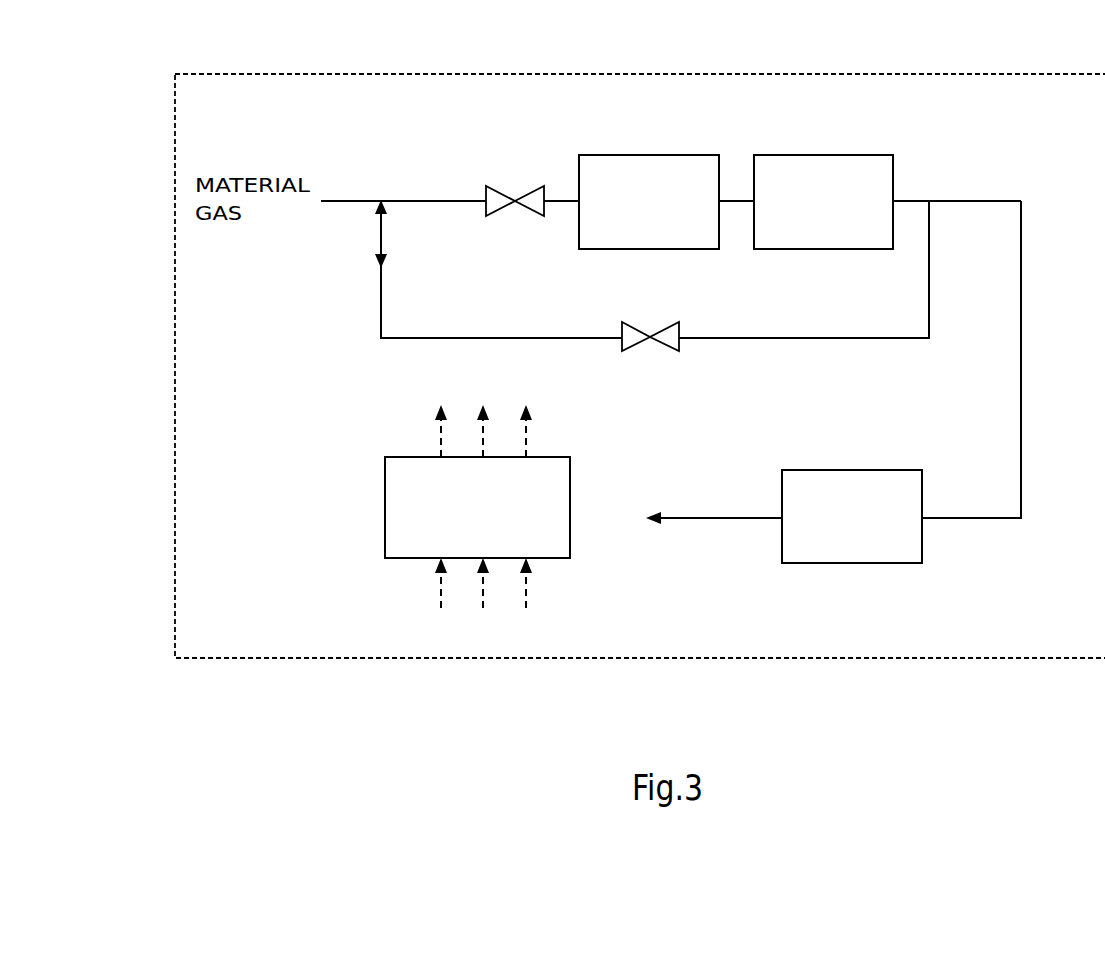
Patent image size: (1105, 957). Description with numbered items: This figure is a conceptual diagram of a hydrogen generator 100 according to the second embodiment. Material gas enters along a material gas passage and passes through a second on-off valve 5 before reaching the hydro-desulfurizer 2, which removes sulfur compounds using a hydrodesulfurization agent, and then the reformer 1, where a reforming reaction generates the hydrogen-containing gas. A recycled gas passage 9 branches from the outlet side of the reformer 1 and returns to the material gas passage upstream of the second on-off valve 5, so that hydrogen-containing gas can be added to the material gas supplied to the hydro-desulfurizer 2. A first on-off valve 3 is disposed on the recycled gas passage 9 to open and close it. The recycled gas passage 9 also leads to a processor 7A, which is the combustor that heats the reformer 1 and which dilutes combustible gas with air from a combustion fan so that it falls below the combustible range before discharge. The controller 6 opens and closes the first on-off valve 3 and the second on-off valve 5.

The hydrogen generator 100 is at (627, 48).
The second on-off valve 5 is at (531, 193).
The hydro-desulfurizer 2 is at (649, 202).
The reformer 1 is at (823, 202).
The recycled gas passage 9 is at (929, 274).
The first on-off valve 3 is at (665, 345).
The controller 6 is at (477, 506).
The processor 7A is at (833, 382).